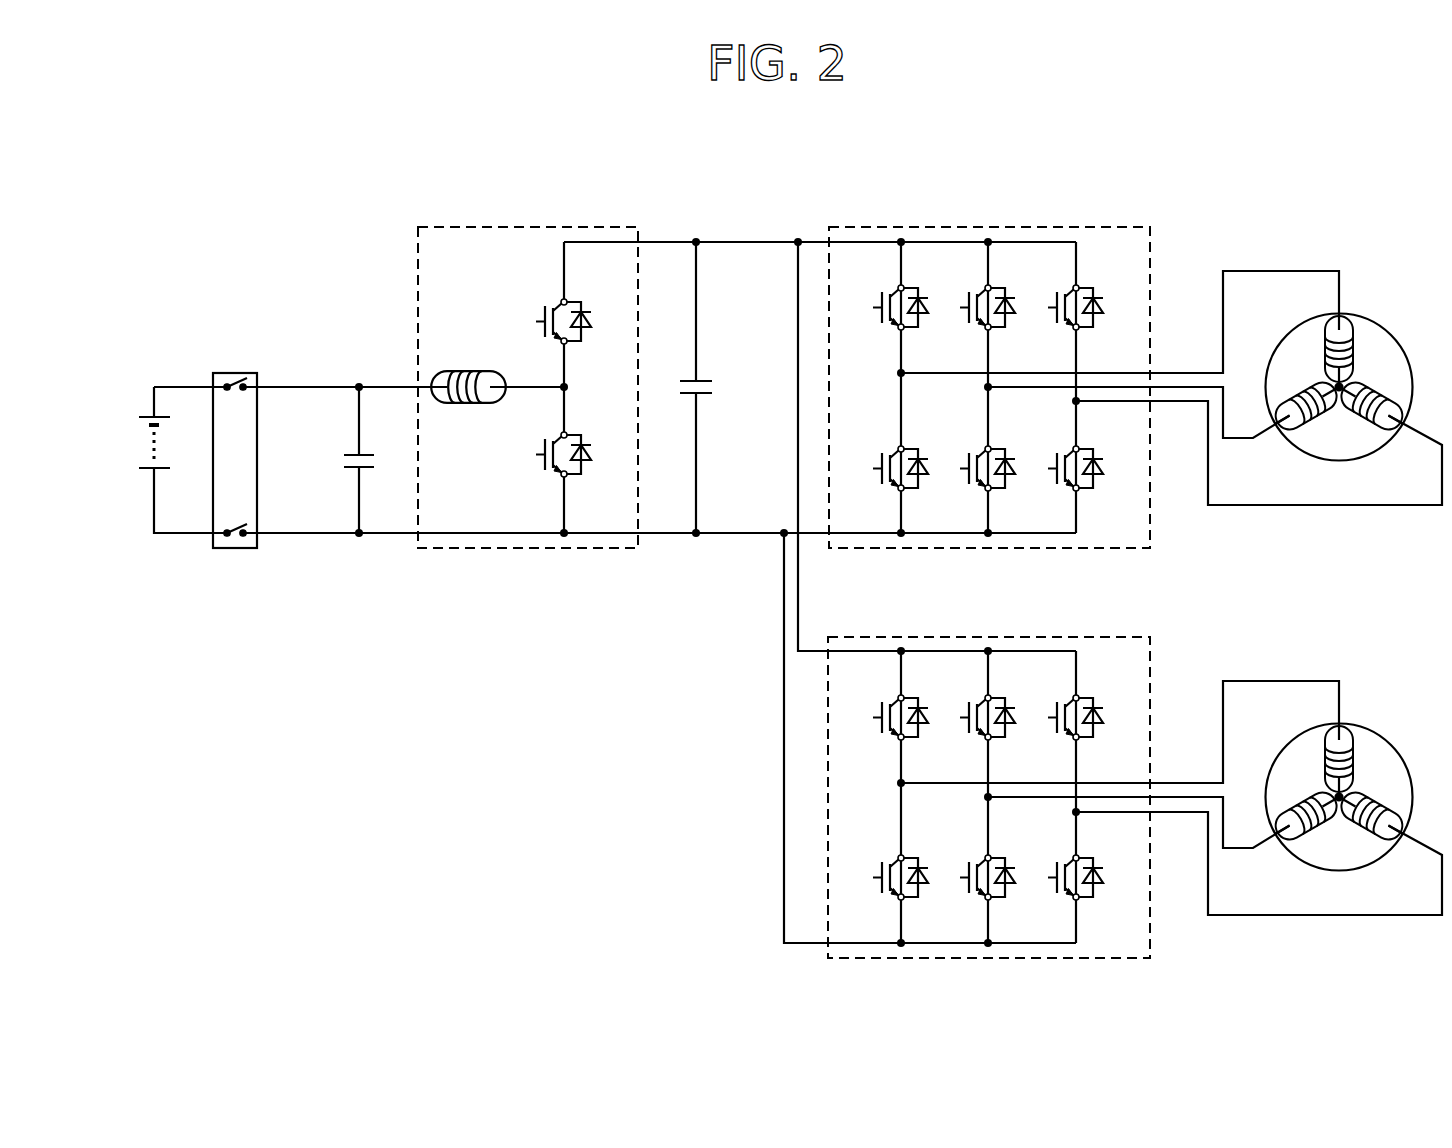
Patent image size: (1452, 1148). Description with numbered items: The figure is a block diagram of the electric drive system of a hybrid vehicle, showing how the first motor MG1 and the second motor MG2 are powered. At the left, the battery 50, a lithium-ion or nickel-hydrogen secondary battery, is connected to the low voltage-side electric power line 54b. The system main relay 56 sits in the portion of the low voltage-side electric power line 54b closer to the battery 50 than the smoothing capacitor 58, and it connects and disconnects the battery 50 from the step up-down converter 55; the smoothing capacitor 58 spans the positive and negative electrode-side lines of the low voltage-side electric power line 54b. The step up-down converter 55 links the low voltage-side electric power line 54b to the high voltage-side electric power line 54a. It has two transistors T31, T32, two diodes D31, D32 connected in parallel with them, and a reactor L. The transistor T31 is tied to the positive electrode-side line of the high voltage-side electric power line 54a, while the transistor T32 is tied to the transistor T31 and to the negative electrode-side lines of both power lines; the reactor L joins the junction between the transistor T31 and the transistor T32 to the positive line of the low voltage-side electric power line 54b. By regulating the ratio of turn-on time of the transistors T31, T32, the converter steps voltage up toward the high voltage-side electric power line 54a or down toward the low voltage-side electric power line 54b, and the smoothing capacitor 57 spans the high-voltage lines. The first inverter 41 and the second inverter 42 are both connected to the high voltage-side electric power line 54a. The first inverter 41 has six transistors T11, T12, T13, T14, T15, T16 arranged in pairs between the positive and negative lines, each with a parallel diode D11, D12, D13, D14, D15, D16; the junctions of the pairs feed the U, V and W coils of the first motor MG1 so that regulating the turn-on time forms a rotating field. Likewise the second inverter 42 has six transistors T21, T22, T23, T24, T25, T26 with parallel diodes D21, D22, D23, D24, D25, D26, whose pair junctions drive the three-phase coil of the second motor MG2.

The battery 50 is at (146, 413).
The system main relay 56 is at (236, 373).
The low voltage-side electric power line 54b is at (316, 392).
The smoothing capacitor 58 is at (366, 452).
The step up-down converter 55 is at (520, 226).
The reactor L is at (467, 371).
The transistor T31 is at (541, 310).
The transistor T32 is at (541, 443).
The diode D31 is at (587, 328).
The diode D32 is at (587, 461).
The smoothing capacitor 57 is at (706, 379).
The high voltage-side electric power line 54a is at (770, 243).
The first inverter 41 is at (988, 226).
The second inverter 42 is at (988, 636).
The transistor T11 is at (879, 296).
The transistor T12 is at (966, 296).
The transistor T13 is at (1054, 296).
The transistor T14 is at (879, 457).
The transistor T15 is at (966, 457).
The transistor T16 is at (1054, 457).
The diode D11 is at (923, 314).
The diode D12 is at (1010, 314).
The diode D13 is at (1098, 314).
The diode D14 is at (923, 475).
The diode D15 is at (1010, 475).
The diode D16 is at (1098, 475).
The transistor T21 is at (879, 706).
The transistor T22 is at (966, 706).
The transistor T23 is at (1054, 706).
The transistor T24 is at (879, 866).
The transistor T25 is at (966, 866).
The transistor T26 is at (1054, 866).
The diode D21 is at (923, 724).
The diode D22 is at (1010, 724).
The diode D23 is at (1098, 724).
The diode D24 is at (923, 884).
The diode D25 is at (1010, 884).
The diode D26 is at (1098, 884).
The first motor MG1 is at (1375, 318).
The second motor MG2 is at (1375, 728).